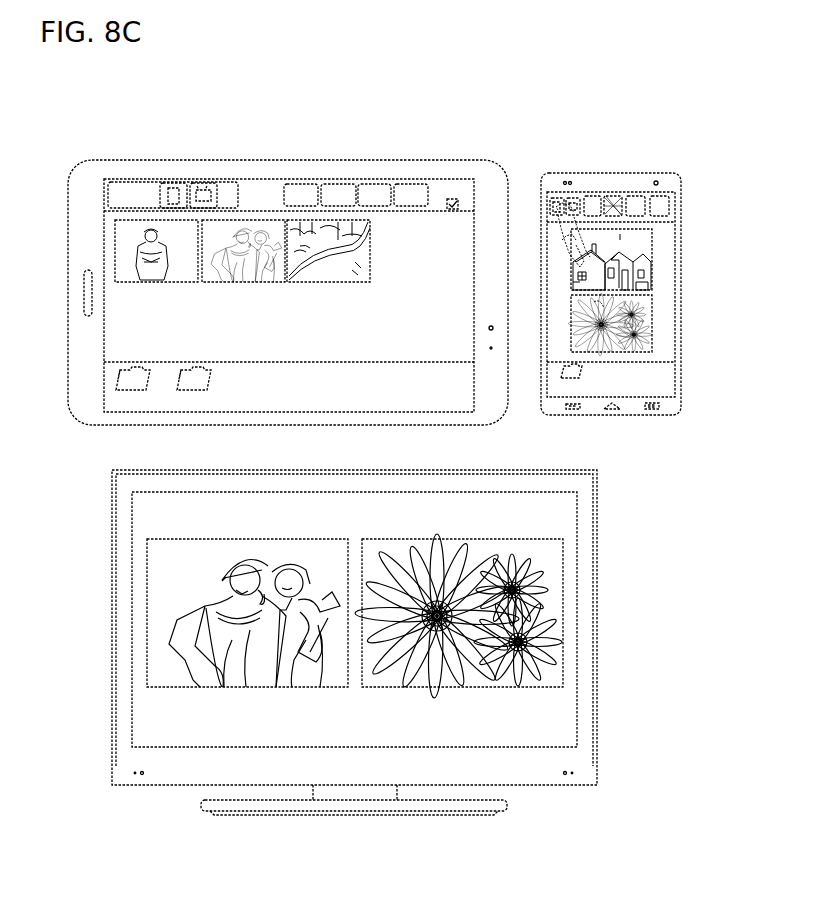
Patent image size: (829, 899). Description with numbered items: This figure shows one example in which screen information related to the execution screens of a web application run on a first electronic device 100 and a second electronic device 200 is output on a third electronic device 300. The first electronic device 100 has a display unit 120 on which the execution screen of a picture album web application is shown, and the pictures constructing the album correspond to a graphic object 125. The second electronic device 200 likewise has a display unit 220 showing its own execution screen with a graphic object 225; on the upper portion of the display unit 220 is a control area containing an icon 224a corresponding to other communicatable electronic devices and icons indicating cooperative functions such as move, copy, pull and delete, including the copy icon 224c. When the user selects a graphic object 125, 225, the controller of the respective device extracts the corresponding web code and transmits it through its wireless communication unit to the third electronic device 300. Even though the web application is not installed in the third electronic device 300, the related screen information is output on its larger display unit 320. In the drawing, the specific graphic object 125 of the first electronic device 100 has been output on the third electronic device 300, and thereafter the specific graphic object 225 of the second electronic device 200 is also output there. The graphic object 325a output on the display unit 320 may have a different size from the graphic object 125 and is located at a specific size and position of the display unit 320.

The first electronic device 100 is at (129, 156).
The display unit 120 is at (165, 178).
The graphic object 125 is at (268, 246).
The second electronic device 200 is at (665, 160).
The icon corresponding to other communicatable electronic devices 224a is at (568, 200).
The copy icon 224c is at (614, 196).
The display unit 220 is at (676, 252).
The graphic object 225 is at (650, 307).
The third electronic device 300 is at (601, 474).
The display unit 320 is at (578, 536).
The graphic object 325a is at (266, 551).